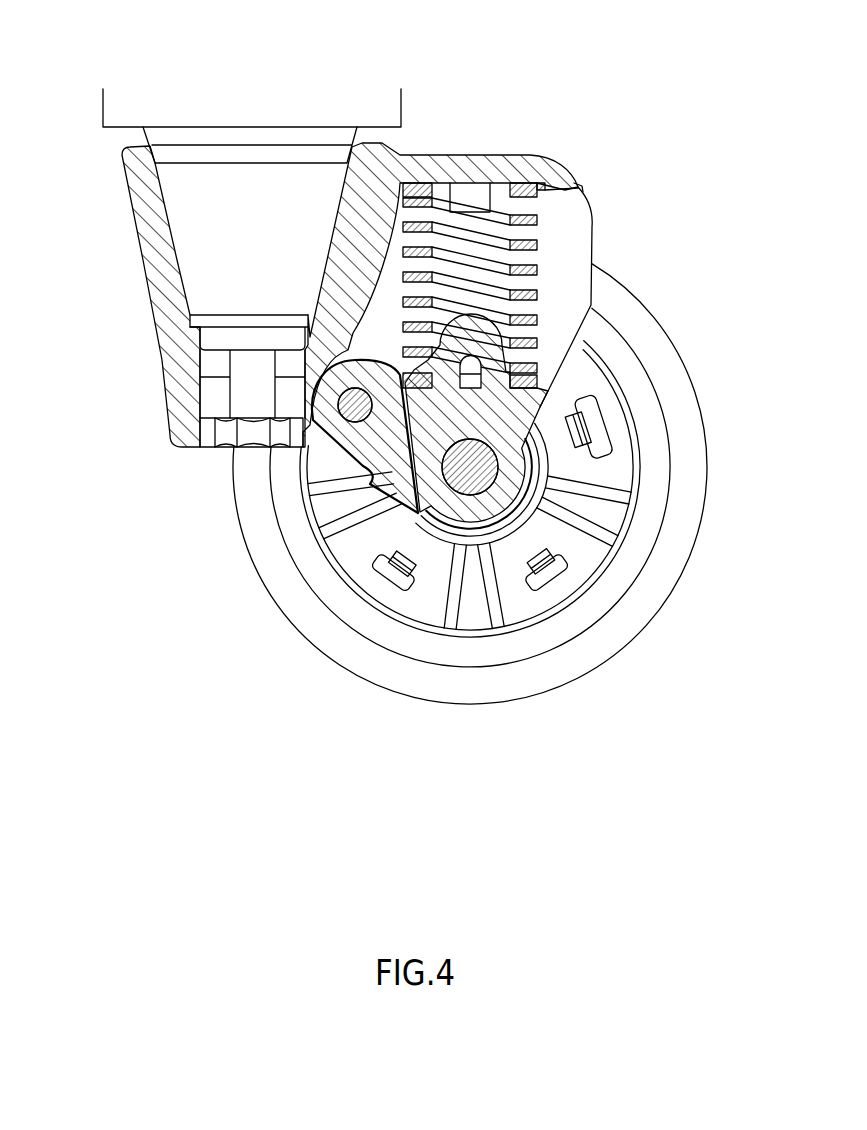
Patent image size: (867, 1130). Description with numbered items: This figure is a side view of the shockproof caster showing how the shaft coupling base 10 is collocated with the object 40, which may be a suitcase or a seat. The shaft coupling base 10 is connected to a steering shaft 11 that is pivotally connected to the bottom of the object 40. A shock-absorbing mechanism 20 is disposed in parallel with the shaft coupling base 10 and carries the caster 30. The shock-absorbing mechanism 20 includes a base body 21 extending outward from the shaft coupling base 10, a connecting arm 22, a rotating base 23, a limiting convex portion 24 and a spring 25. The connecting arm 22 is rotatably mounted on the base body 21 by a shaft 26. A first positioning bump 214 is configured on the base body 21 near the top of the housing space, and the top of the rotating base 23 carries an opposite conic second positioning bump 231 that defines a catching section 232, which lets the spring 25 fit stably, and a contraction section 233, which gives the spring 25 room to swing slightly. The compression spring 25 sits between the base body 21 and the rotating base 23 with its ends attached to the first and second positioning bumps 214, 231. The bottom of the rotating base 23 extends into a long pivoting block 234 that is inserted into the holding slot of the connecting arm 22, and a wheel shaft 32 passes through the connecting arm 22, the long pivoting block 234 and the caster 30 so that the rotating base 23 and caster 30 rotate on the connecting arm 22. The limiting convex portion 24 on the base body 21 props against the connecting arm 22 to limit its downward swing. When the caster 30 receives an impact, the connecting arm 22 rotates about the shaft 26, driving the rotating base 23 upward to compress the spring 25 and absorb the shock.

The shaft coupling base 10 is at (133, 223).
The steering shaft 11 is at (215, 384).
The shock-absorbing mechanism 20 is at (561, 134).
The base body 21 is at (464, 152).
The connecting arm 22 is at (322, 416).
The rotating base 23 is at (544, 408).
The limiting convex portion 24 is at (330, 472).
The spring 25 is at (540, 272).
The shaft 26 is at (324, 418).
The caster 30 is at (614, 663).
The wheel shaft 32 is at (483, 463).
The object 40 is at (252, 127).
The first positioning bump 214 is at (580, 190).
The second positioning bump 231 is at (430, 362).
The catching section 232 is at (532, 311).
The contraction section 233 is at (545, 357).
The long pivoting block 234 is at (578, 418).